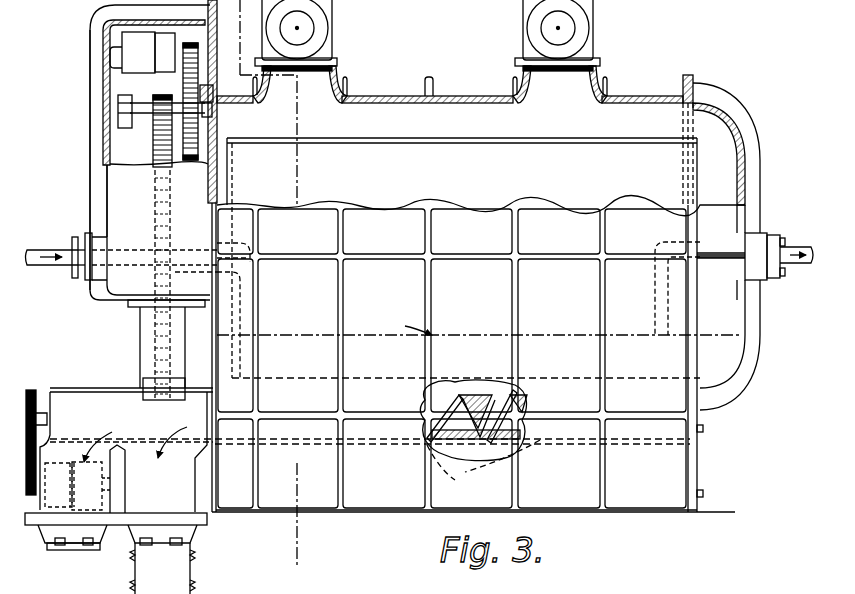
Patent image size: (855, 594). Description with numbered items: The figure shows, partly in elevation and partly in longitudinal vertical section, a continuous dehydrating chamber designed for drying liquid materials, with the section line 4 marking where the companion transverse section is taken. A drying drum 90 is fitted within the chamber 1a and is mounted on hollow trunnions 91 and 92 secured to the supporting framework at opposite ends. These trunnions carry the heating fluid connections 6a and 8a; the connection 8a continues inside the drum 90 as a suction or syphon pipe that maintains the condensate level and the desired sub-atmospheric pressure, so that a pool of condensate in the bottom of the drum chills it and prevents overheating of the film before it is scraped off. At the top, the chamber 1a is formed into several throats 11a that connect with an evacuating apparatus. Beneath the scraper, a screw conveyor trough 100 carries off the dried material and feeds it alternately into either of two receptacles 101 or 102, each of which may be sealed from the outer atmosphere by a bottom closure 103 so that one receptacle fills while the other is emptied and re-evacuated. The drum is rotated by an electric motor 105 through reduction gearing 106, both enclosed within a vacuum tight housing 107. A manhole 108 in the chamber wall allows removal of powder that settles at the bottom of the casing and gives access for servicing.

The chamber 1a is at (647, 95).
The section line 4- 4 is at (252, 20).
The heating fluid connection 6a is at (50, 248).
The heating fluid connection 8a is at (798, 246).
The throats 11a is at (336, 72).
The drum 90 is at (468, 138).
The trunnion 91 is at (252, 257).
The trunnion 92 is at (700, 240).
The screw conveyor trough 100 is at (470, 452).
The receptacle 101 is at (200, 531).
The receptacle 102 is at (43, 540).
The bottom closure 103 is at (78, 553).
The electric motor 105 is at (132, 75).
The reduction gearing 106 is at (184, 78).
The vacuum tight housing 107 is at (100, 72).
The manhole 108 is at (698, 462).